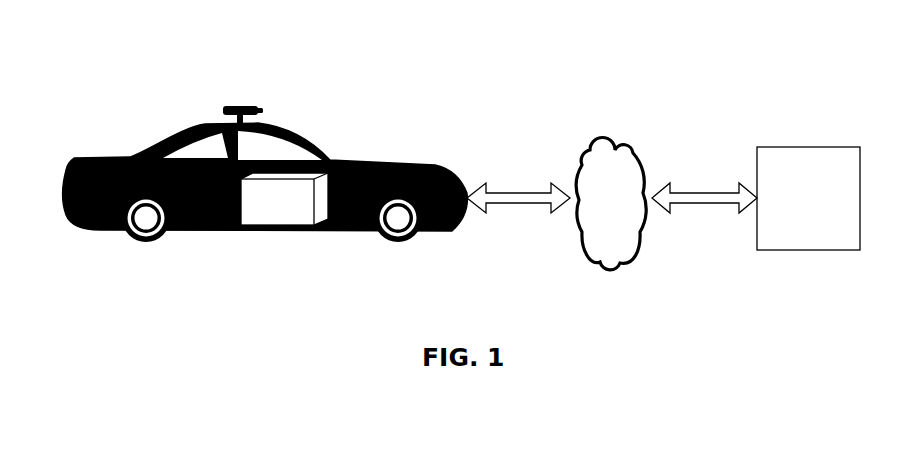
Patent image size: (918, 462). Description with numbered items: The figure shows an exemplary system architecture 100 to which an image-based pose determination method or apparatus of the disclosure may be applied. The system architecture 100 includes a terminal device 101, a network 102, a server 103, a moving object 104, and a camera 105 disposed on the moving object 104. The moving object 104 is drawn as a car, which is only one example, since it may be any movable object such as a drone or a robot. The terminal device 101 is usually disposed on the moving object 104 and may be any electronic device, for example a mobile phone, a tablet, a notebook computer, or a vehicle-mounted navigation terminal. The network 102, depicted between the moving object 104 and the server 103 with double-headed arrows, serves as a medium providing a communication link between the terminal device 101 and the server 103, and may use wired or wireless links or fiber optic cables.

The system architecture 100 is at (782, 55).
The terminal device 101 is at (276, 225).
The network 102 is at (682, 107).
The server 103 is at (773, 147).
The moving object 104 is at (432, 166).
The camera 105 is at (262, 110).